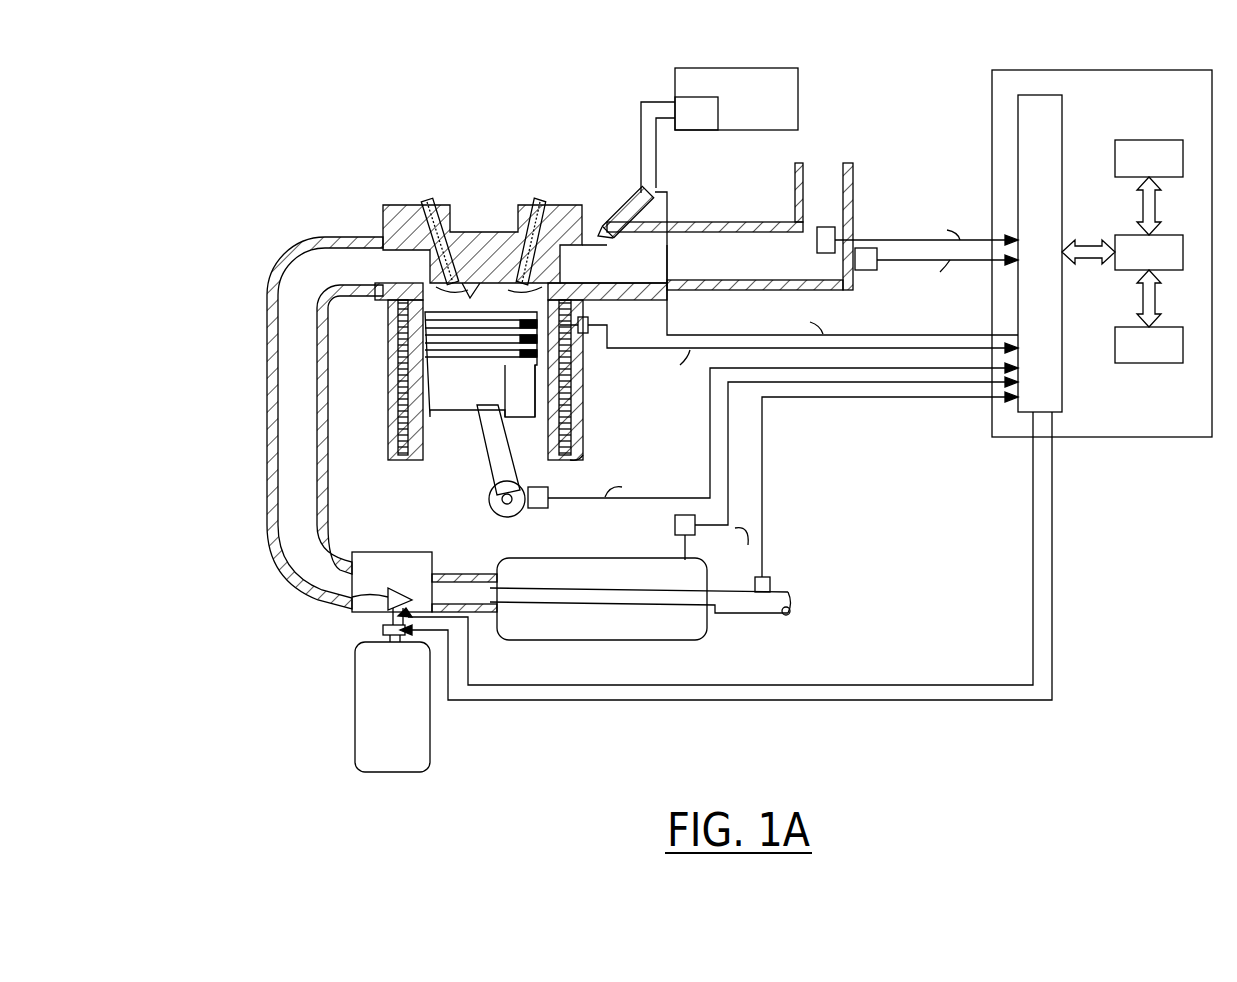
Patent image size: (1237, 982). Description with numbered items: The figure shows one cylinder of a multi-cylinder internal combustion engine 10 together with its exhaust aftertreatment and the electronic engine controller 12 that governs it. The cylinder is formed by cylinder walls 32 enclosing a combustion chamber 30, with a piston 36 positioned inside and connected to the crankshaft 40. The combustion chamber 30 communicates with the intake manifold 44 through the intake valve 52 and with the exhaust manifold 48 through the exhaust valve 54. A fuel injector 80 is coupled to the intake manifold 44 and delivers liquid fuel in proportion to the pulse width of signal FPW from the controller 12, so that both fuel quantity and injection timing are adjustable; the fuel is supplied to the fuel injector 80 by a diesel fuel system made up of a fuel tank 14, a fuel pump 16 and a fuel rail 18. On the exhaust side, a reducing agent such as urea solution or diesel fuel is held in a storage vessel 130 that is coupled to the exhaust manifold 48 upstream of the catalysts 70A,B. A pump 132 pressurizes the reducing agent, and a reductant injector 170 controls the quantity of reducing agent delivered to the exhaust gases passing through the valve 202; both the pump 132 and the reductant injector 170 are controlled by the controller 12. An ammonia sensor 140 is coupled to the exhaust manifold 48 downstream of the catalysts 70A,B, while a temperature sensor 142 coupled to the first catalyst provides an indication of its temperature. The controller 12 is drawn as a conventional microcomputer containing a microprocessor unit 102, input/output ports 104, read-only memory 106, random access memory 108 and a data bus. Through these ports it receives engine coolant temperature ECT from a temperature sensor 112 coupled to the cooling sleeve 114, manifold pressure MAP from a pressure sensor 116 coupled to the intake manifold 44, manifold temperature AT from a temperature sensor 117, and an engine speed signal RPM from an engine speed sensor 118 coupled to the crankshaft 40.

The internal combustion engine 10 is at (302, 116).
The electronic engine controller 12 is at (1125, 105).
The fuel tank 14 is at (762, 68).
The fuel pump 16 is at (720, 115).
The fuel rail 18 is at (641, 104).
The combustion chamber 30 is at (470, 295).
The cylinder walls 32 is at (425, 458).
The piston 36 is at (455, 400).
The crankshaft 40 is at (500, 518).
The intake manifold 44 is at (755, 274).
The exhaust manifold 48 is at (290, 300).
The intake valve 52 is at (545, 280).
The exhaust valve 54 is at (410, 282).
The catalysts 70A,B is at (560, 558).
The fuel injector 80 is at (612, 218).
The microprocessor unit 102 is at (1118, 235).
The input/output ports 104 is at (990, 125).
The read-only memory 106 is at (1152, 140).
The random access memory 108 is at (1147, 363).
The temperature sensor 112 is at (595, 333).
The cooling sleeve 114 is at (585, 455).
The pressure sensor 116 is at (819, 250).
The temperature sensor 117 is at (866, 270).
The engine speed sensor 118 is at (550, 505).
The storage vessel 130 is at (355, 705).
The pump 132 is at (383, 628).
The ammonia sensor 140 is at (770, 578).
The temperature sensor 142 is at (676, 520).
The reductant injector 170 is at (388, 597).
The valve 202 is at (360, 552).